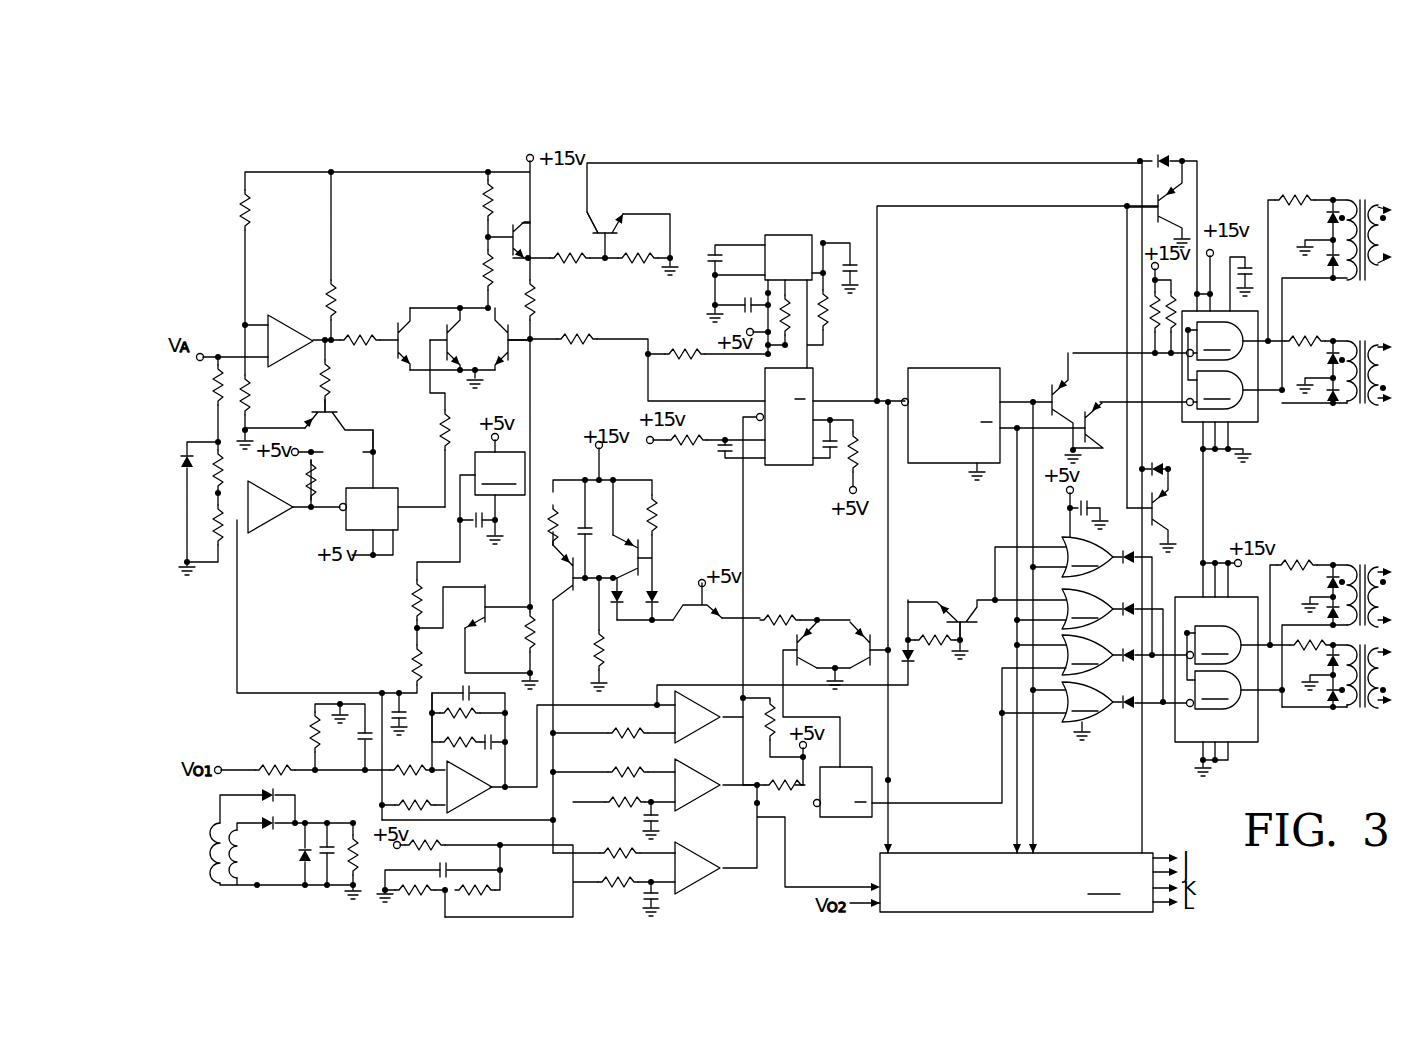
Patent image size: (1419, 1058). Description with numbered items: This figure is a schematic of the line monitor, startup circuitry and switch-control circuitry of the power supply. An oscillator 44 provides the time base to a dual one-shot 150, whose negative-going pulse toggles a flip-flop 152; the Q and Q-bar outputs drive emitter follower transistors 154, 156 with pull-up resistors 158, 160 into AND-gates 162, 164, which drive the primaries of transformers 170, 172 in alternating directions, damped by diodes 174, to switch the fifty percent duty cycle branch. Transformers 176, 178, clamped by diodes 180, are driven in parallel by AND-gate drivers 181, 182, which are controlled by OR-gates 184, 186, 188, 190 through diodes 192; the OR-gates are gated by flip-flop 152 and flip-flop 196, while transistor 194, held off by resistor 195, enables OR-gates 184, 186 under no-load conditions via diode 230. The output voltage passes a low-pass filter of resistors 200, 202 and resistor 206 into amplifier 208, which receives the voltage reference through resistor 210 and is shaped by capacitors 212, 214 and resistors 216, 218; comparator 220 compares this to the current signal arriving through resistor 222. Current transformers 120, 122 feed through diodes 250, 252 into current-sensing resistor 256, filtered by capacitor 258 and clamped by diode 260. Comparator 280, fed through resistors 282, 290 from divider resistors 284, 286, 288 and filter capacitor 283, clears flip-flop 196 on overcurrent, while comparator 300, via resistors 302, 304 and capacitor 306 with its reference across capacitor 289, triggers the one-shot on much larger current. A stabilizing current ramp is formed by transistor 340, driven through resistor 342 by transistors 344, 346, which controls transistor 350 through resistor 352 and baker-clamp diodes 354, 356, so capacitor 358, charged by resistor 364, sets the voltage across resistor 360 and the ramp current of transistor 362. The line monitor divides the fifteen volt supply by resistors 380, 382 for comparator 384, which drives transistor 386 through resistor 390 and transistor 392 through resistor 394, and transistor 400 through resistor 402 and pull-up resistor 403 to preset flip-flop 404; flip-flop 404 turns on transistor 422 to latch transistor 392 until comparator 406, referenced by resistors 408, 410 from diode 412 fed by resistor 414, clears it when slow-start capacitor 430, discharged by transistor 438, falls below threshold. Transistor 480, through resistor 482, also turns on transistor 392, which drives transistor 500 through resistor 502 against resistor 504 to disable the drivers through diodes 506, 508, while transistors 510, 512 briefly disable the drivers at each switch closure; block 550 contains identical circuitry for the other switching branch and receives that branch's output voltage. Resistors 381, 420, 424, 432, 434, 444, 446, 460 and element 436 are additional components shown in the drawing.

The oscillator 44 is at (789, 235).
The transformer 120 is at (218, 879).
The transformer 122 is at (248, 882).
The dual one-shot 150 is at (801, 465).
The flip-flop 152 is at (940, 463).
The emitter follower transistor 154 is at (1050, 380).
The emitter follower transistor 156 is at (1105, 448).
The pull-up resistor 158 is at (1148, 312).
The pull-up resistor 160 is at (1166, 330).
The AND-gate 162 is at (1220, 366).
The AND-gate 164 is at (1220, 390).
The transformer 170 is at (1350, 205).
The transformer 172 is at (1352, 346).
The diodes 174 is at (1326, 220).
The transformer 176 is at (1346, 565).
The transformer 178 is at (1350, 710).
The clamping diodes 180 is at (1328, 582).
The AND-gate driver 181 is at (1216, 669).
The AND-gate driver 182 is at (1218, 690).
The OR-gate 184 is at (1087, 557).
The OR-gate 186 is at (1087, 609).
The OR-gate 188 is at (1087, 655).
The OR-gate 190 is at (1087, 702).
The diodes 192 is at (1128, 550).
The transistor 194 is at (957, 610).
The resistor 195 is at (914, 664).
The flip-flop 196 is at (840, 817).
The resistor 200 is at (282, 768).
The resistor 202 is at (310, 736).
The resistor 206 is at (408, 755).
The amplifier 208 is at (482, 798).
The resistor 210 is at (413, 794).
The capacitor 212 is at (452, 691).
The capacitor 214 is at (482, 752).
The resistor 216 is at (484, 685).
The resistor 218 is at (462, 719).
The comparator 220 is at (688, 737).
The resistor 222 is at (620, 732).
The diode 230 is at (931, 676).
The diode 250 is at (264, 793).
The diode 252 is at (288, 830).
The current-sensing resistor 256 is at (356, 849).
The capacitor 258 is at (330, 846).
The clamping diode 260 is at (305, 867).
The comparator 280 is at (722, 882).
The resistor 282 is at (616, 882).
The filter capacitor 283 is at (668, 900).
The voltage divider resistor 284 is at (434, 845).
The voltage divider resistor 286 is at (476, 890).
The voltage divider resistor 288 is at (415, 901).
The capacitor 289 is at (447, 870).
The resistor 290 is at (622, 853).
The comparator 300 is at (706, 790).
The resistor 302 is at (620, 770).
The resistor 304 is at (616, 802).
The capacitor 306 is at (668, 824).
The transistor 340 is at (688, 625).
The resistor 342 is at (768, 618).
The transistor 344 is at (794, 646).
The transistor 346 is at (861, 632).
The transistor 350 is at (614, 556).
The resistor 352 is at (659, 512).
The diode 354 is at (616, 606).
The diode 356 is at (656, 597).
The capacitor 358 is at (562, 502).
The resistor 360 is at (578, 526).
The transistor 362 is at (571, 590).
The resistor 364 is at (601, 660).
The voltage divider resistor 380 is at (364, 344).
The resistor 381 is at (241, 212).
The voltage divider resistor 382 is at (249, 387).
The comparator 384 is at (281, 317).
The transistor 386 is at (401, 320).
The resistor 390 is at (336, 304).
The transistor 392 is at (520, 256).
The resistor 394 is at (485, 272).
The transistor 400 is at (310, 416).
The resistor 402 is at (329, 382).
The pull-up resistor 403 is at (373, 444).
The flip-flop 404 is at (380, 488).
The comparator 406 is at (286, 520).
The resistor 408 is at (221, 468).
The resistor 410 is at (224, 552).
The diode 412 is at (184, 444).
The resistor 414 is at (214, 386).
The resistor 420 is at (330, 480).
The transistor 422 is at (480, 339).
The resistor 424 is at (442, 428).
The capacitor 430 is at (388, 692).
The resistor 432 is at (406, 603).
The resistor 434 is at (404, 660).
The reference block 436 is at (500, 473).
The transistor 438 is at (497, 582).
The resistor 444 is at (524, 651).
The resistor 446 is at (535, 308).
The resistor 460 is at (483, 206).
The transistor 480 is at (504, 384).
The resistor 482 is at (570, 344).
The transistor 500 is at (598, 228).
The resistor 502 is at (570, 262).
The resistor 504 is at (640, 262).
The diode 506 is at (1152, 158).
The diode 508 is at (1154, 464).
The transistor 510 is at (1154, 199).
The transistor 512 is at (1168, 515).
The block 550 is at (1016, 882).